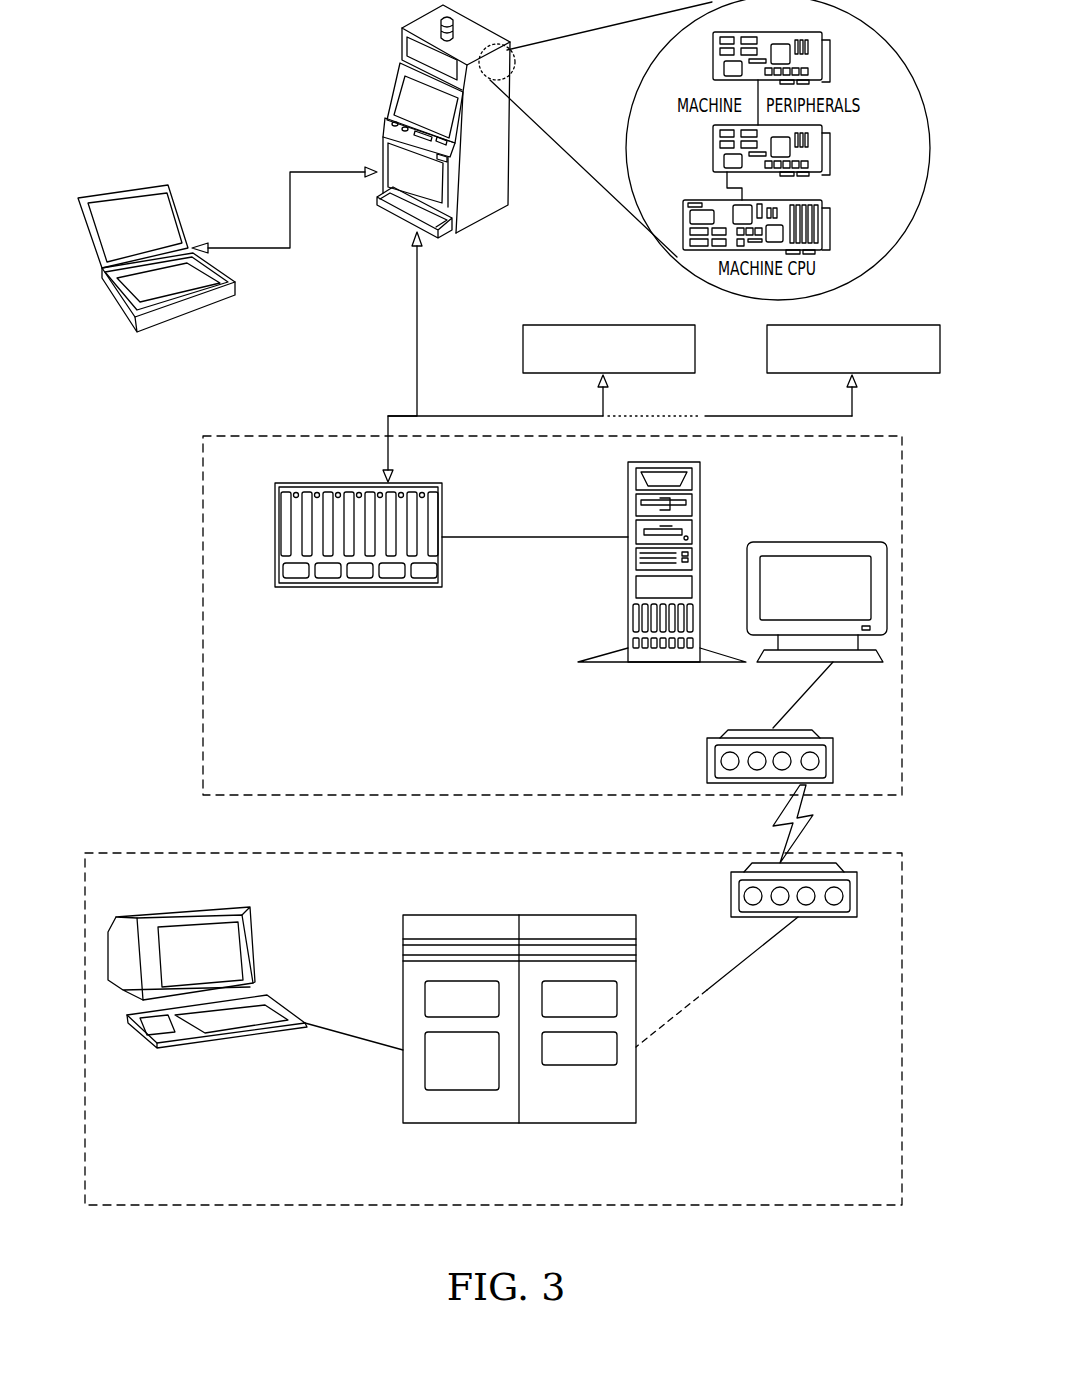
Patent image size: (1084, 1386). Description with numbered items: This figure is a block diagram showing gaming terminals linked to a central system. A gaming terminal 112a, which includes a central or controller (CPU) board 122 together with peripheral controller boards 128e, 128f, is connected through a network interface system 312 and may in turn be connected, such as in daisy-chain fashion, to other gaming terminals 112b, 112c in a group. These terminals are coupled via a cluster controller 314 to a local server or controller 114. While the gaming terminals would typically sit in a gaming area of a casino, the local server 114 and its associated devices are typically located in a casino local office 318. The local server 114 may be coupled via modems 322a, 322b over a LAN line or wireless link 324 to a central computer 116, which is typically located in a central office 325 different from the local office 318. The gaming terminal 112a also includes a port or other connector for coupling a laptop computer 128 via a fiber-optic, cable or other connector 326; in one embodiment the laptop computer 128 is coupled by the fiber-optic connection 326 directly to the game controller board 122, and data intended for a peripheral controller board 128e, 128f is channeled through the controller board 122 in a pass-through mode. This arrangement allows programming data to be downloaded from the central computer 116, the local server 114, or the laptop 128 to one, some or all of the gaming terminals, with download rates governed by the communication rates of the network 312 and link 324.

The gaming terminal 112a is at (402, 62).
The laptop computer 128 is at (117, 190).
The connector 326 is at (290, 172).
The peripheral controller board 128f is at (832, 68).
The peripheral controller board 128e is at (831, 150).
The central or controller (CPU) board 122 is at (831, 226).
The gaming terminal 112b is at (601, 325).
The gaming terminal 112c is at (866, 325).
The network interface system 312 is at (452, 416).
The cluster controller 314 is at (443, 512).
The local server or controller 114 is at (700, 514).
The local office 318 is at (903, 560).
The modem 322a is at (707, 768).
The LAN line or wireless link 324 is at (812, 820).
The modem 322b is at (731, 905).
The central office 325 is at (903, 1000).
The central computer 116 is at (636, 1093).